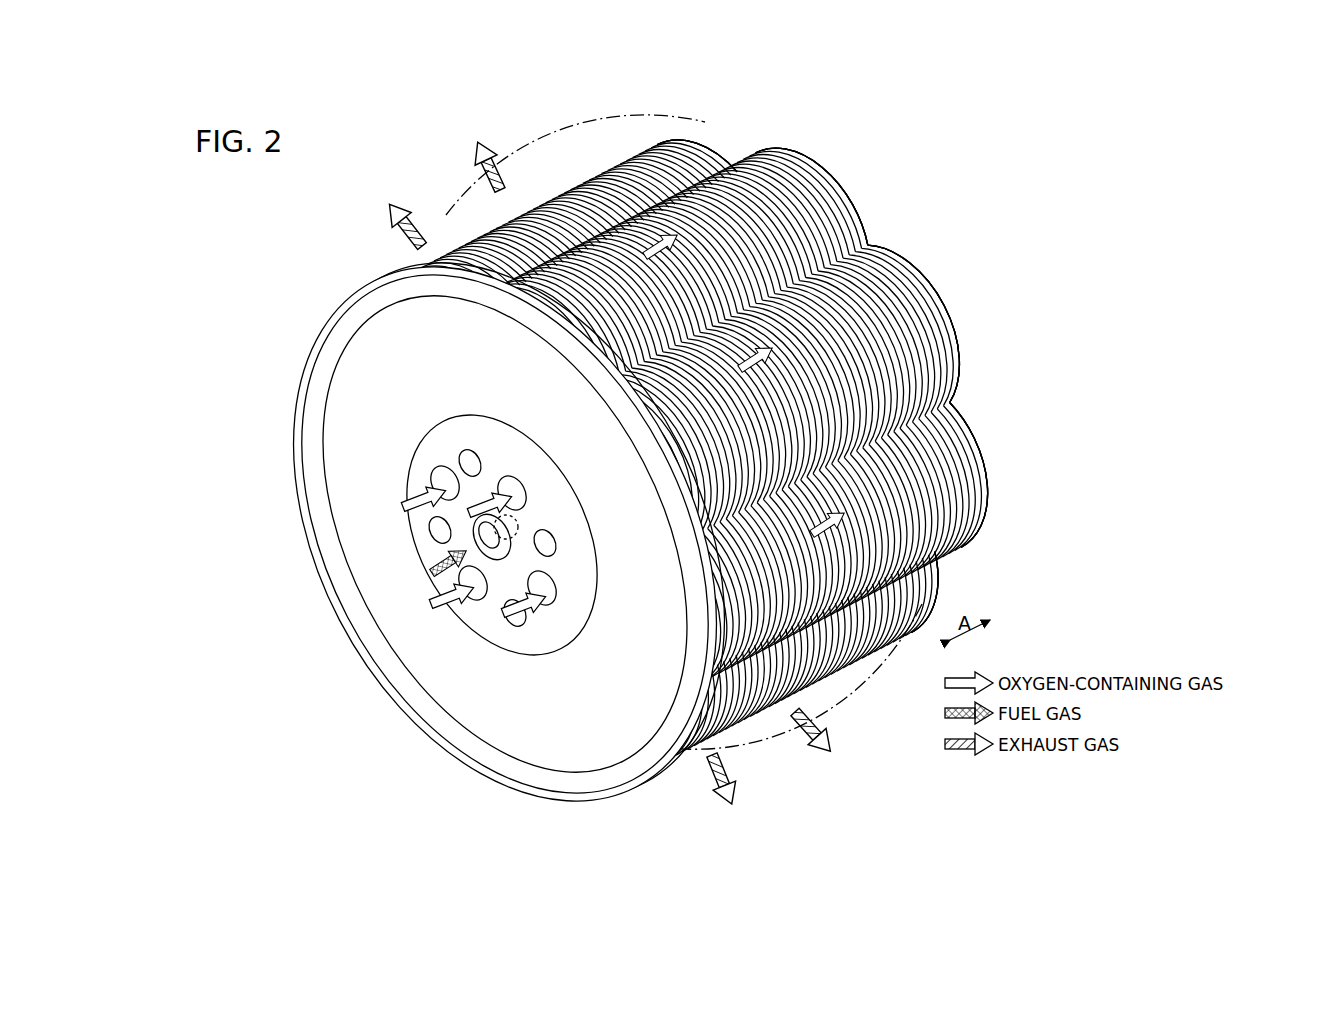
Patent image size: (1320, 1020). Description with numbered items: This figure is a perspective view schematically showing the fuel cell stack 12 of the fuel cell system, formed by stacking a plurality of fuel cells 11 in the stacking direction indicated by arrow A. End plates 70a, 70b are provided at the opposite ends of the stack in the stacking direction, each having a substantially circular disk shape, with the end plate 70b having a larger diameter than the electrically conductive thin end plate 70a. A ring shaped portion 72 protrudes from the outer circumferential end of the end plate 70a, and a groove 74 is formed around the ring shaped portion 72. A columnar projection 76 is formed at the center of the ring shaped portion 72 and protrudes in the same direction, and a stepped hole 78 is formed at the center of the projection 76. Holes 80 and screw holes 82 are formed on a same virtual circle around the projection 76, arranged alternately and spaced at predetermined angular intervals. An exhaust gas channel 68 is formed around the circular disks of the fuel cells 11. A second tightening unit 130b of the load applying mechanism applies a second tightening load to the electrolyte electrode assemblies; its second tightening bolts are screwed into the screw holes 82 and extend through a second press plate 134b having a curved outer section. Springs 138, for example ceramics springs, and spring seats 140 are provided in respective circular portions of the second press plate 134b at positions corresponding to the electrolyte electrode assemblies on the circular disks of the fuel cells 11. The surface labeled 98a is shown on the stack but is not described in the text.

The fuel cell stack 12 is at (346, 184).
The fuel cell 11 is at (472, 221).
The exhaust gas channel 68 is at (501, 176).
The end plate 70a is at (347, 290).
The end plate 70b is at (480, 192).
The ring shaped portion 72 is at (316, 522).
The groove 74 is at (672, 528).
The columnar projection 76 is at (414, 521).
The stepped hole 78 is at (497, 562).
The hole 80 is at (445, 472).
The screw hole 82 is at (472, 450).
The front surface 98a is at (470, 705).
The second tightening unit 130b is at (906, 232).
The second press plate 134b is at (954, 372).
The spring 138 is at (610, 158).
The spring seat 140 is at (692, 120).